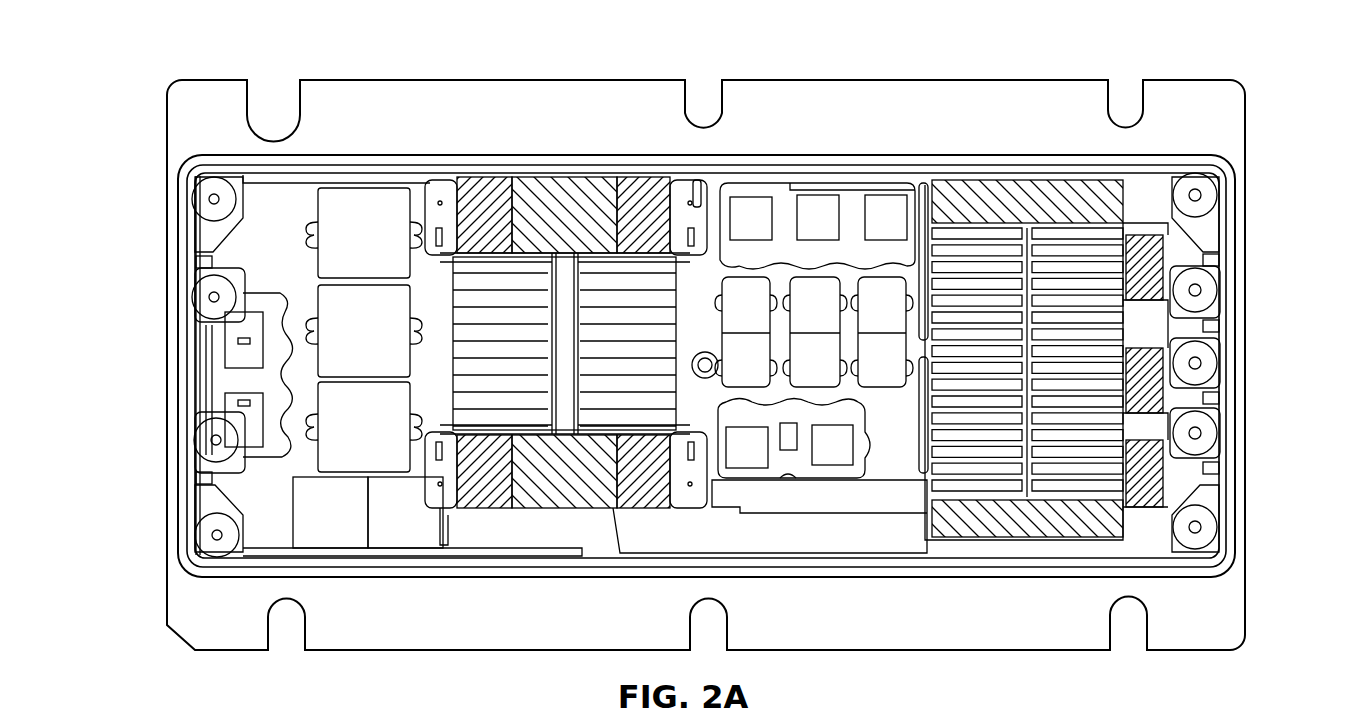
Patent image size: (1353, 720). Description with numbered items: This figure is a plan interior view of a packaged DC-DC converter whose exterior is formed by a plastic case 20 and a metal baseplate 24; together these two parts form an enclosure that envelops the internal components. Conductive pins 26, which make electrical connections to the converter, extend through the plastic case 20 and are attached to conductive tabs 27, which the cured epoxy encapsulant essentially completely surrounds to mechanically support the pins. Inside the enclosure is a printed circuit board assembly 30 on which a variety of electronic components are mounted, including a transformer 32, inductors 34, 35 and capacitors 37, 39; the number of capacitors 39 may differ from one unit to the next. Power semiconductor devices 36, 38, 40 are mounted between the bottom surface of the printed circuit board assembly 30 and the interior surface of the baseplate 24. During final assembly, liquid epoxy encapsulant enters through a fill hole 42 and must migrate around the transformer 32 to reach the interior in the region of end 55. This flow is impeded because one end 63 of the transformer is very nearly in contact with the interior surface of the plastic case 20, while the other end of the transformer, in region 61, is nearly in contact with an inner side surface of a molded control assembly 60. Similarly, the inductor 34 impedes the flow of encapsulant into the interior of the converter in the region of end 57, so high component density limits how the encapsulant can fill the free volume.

The plastic case 20 is at (183, 218).
The metal baseplate 24 is at (205, 632).
The conductive pins 26 is at (214, 297).
The conductive tabs 27 is at (198, 318).
The printed circuit board assembly 30 is at (258, 231).
The transformer 32 is at (486, 360).
The inductor 34 is at (1030, 195).
The inductor 35 is at (313, 521).
The power semiconductor device 36 is at (737, 232).
The capacitors 37 is at (801, 320).
The power semiconductor device 38 is at (818, 462).
The capacitor 39 is at (350, 250).
The power semiconductor device 40 is at (245, 357).
The fill hole 42 is at (706, 352).
The end 55 is at (155, 402).
The end 57 is at (1251, 333).
The molded control assembly 60 is at (641, 547).
The region 61 is at (677, 512).
The end of the transformer 63 is at (592, 178).